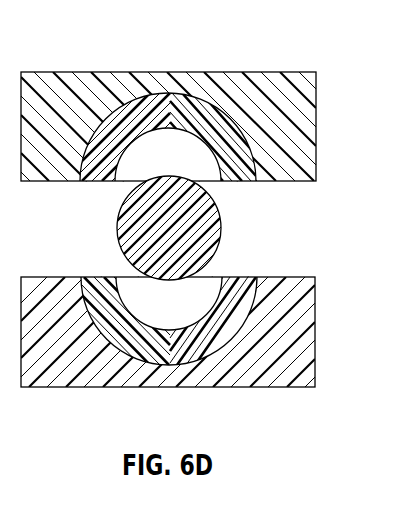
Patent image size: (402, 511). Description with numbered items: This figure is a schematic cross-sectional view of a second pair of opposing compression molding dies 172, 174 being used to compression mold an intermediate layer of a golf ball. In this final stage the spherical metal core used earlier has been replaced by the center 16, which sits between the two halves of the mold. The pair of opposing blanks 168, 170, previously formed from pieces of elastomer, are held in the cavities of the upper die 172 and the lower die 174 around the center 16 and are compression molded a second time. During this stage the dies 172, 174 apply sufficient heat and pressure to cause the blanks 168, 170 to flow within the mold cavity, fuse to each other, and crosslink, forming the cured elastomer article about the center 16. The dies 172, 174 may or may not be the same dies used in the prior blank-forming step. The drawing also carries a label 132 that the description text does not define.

The molding die 172 is at (275, 72).
The molding die 174 is at (316, 361).
The blank 168 is at (238, 182).
The blank 170 is at (238, 277).
The socket surface 132 is at (120, 182).
The center 16 is at (117, 229).